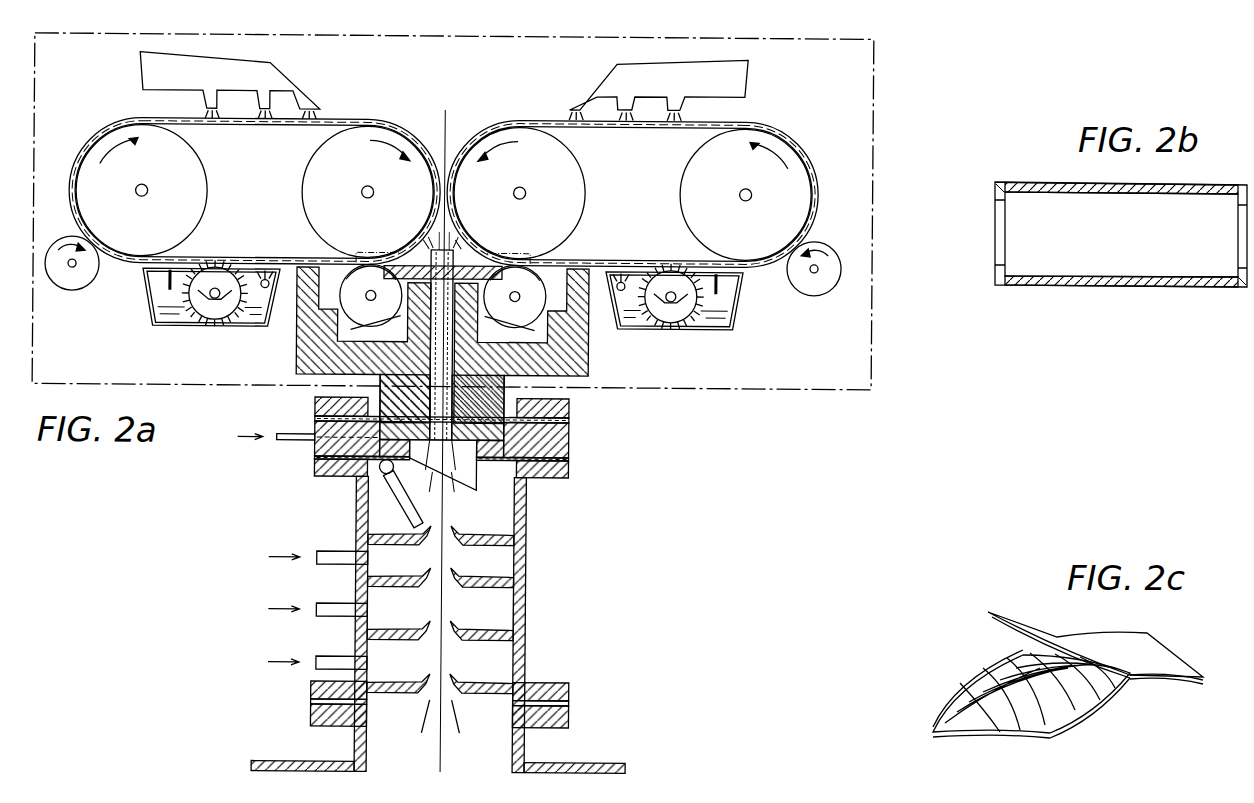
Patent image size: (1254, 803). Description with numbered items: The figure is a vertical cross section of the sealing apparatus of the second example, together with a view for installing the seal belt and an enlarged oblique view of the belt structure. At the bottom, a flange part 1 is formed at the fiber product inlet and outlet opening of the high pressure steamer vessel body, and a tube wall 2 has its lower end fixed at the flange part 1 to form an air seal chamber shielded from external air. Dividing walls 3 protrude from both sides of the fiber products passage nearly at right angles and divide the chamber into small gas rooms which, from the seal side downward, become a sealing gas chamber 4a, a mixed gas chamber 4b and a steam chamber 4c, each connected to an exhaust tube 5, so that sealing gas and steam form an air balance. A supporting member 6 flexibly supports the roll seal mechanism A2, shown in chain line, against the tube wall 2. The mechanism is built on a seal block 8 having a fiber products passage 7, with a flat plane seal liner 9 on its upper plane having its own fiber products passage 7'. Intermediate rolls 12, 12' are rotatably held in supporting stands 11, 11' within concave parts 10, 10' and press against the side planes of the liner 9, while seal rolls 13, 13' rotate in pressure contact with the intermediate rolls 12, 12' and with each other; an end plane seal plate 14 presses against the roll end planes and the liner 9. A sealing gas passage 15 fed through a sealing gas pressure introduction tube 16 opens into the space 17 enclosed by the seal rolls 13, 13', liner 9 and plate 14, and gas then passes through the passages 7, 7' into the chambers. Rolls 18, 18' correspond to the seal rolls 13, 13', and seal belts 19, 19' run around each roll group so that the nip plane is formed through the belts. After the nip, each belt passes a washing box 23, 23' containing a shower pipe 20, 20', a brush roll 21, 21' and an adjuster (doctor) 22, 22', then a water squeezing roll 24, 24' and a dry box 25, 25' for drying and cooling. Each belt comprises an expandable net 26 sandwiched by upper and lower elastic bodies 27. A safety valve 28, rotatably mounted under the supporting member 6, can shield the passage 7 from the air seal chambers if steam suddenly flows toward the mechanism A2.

In FIG. 2a, the flange part 1 is at (577, 715).
In FIG. 2a, the tube wall 2 is at (528, 512).
In FIG. 2a, the dividing walls 3 is at (402, 630).
In FIG. 2a, the sealing gas chamber 4a is at (512, 565).
In FIG. 2a, the mixed gas chamber 4b is at (512, 613).
In FIG. 2a, the steam chamber 4c is at (512, 665).
In FIG. 2a, the exhaust tube 5 is at (322, 553).
In FIG. 2a, the supporting member 6 is at (570, 437).
In FIG. 2a, the fiber products passage 7 is at (449, 474).
In FIG. 2a, the fiber products passage 7' is at (436, 221).
In FIG. 2a, the seal block 8 is at (300, 378).
In FIG. 2a, the flat plane seal liner 9 is at (410, 272).
In FIG. 2a, the concave part 10 is at (346, 345).
In FIG. 2a, the concave part 10' is at (543, 346).
In FIG. 2a, the supporting stand 11 is at (332, 310).
In FIG. 2a, the supporting stand 11' is at (553, 311).
In FIG. 2a, the intermediate roll 12 is at (345, 248).
In FIG. 2a, the intermediate roll 12' is at (546, 248).
In FIG. 2a, the seal roll 13 is at (368, 175).
In FIG. 2b, the seal roll 13 is at (1098, 234).
In FIG. 2a, the seal roll 13' is at (520, 174).
In FIG. 2a, the end plane seal plate 14 is at (482, 265).
In FIG. 2a, the sealing gas passage 15 is at (480, 442).
In FIG. 2a, the sealing gas pressure introduction tube 16 is at (284, 434).
In FIG. 2a, the space 17 is at (449, 240).
In FIG. 2a, the roll 18 is at (119, 190).
In FIG. 2b, the roll 18 is at (1093, 235).
In FIG. 2a, the roll 18' is at (770, 195).
In FIG. 2a, the seal belt 19 is at (254, 182).
In FIG. 2b, the seal belt 19 is at (1121, 257).
In FIG. 2a, the seal belt 19' is at (651, 194).
In FIG. 2a, the shower pipe 20 is at (250, 257).
In FIG. 2a, the shower pipe 20' is at (632, 259).
In FIG. 2a, the brush roll 21 is at (214, 313).
In FIG. 2a, the brush roll 21' is at (670, 316).
In FIG. 2a, the adjuster (doctor) 22 is at (139, 282).
In FIG. 2a, the adjuster (doctor) 22' is at (748, 287).
In FIG. 2a, the washing box 23 is at (211, 317).
In FIG. 2a, the washing box 23' is at (674, 320).
In FIG. 2a, the water squeezing roll 24 is at (72, 281).
In FIG. 2a, the water squeezing roll 24' is at (814, 286).
In FIG. 2a, the dry box 25 is at (207, 85).
In FIG. 2a, the dry box 25' is at (680, 90).
In FIG. 2c, the expandable net 26 is at (968, 680).
In FIG. 2c, the elastic body 27 is at (1127, 636).
In FIG. 2a, the safety valve 28 is at (385, 490).
In FIG. 2a, the roll seal mechanism A2 is at (760, 392).